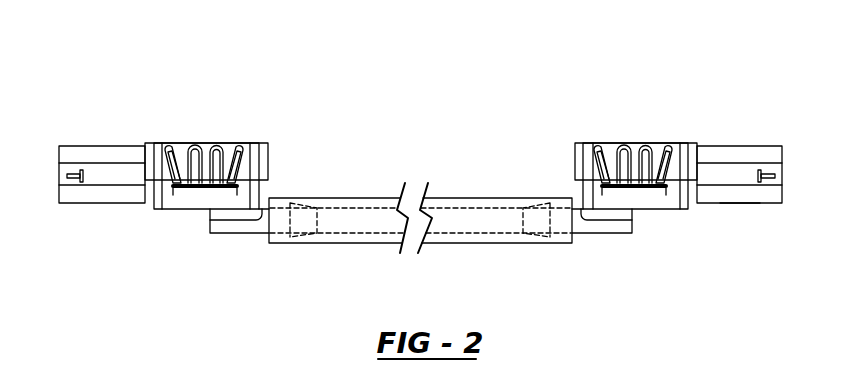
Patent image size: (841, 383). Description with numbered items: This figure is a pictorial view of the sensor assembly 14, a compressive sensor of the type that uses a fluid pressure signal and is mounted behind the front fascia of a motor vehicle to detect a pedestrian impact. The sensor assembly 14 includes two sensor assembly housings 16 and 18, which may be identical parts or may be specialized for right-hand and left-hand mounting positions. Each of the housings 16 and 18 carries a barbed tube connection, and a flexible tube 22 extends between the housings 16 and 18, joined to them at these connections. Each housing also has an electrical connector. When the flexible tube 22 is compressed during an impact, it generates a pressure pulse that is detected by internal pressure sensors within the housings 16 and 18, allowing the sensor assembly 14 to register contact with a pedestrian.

The sensor assembly 14 is at (507, 91).
The sensor assembly housing 16 is at (207, 143).
The sensor assembly housing 18 is at (657, 143).
The flexible tube 22 is at (493, 197).